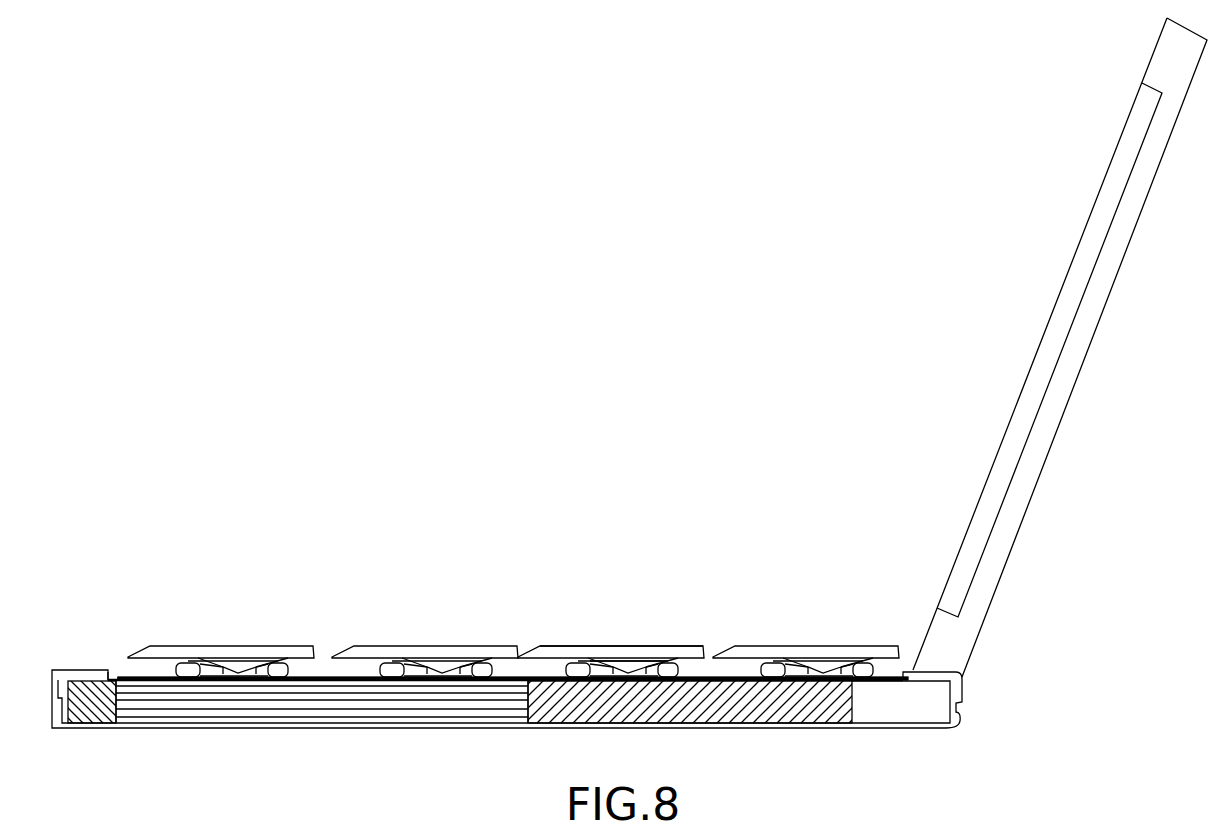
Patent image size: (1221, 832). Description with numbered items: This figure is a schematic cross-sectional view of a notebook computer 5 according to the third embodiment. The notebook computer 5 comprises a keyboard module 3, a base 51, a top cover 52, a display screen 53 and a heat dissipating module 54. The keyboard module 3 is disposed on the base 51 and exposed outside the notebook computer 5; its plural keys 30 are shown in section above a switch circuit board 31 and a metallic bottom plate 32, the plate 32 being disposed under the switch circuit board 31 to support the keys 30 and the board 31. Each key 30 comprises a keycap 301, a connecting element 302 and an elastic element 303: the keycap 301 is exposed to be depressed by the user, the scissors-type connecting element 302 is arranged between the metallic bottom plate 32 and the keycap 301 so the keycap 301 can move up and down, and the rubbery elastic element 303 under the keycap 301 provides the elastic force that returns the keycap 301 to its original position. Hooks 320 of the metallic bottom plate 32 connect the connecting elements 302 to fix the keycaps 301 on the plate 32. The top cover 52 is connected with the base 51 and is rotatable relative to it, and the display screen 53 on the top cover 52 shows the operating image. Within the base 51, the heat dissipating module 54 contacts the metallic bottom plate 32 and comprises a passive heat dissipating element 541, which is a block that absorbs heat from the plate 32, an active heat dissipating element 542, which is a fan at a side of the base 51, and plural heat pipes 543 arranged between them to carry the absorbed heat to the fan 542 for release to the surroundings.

The notebook computer 5 is at (330, 284).
The keyboard module 3 is at (314, 621).
The key 30 is at (513, 621).
The keycap 301 is at (597, 655).
The connecting element 302 is at (593, 665).
The elastic element 303 is at (669, 636).
The switch circuit board 31 is at (150, 676).
The metallic bottom plate 32 is at (122, 678).
The hook 320 is at (153, 682).
The base 51 is at (956, 710).
The top cover 52 is at (1089, 322).
The display screen 53 is at (1082, 265).
The heat dissipating module 54 is at (133, 520).
The passive heat dissipating element 541 is at (813, 742).
The active heat dissipating element 542 is at (62, 742).
The heat pipe 543 is at (368, 693).